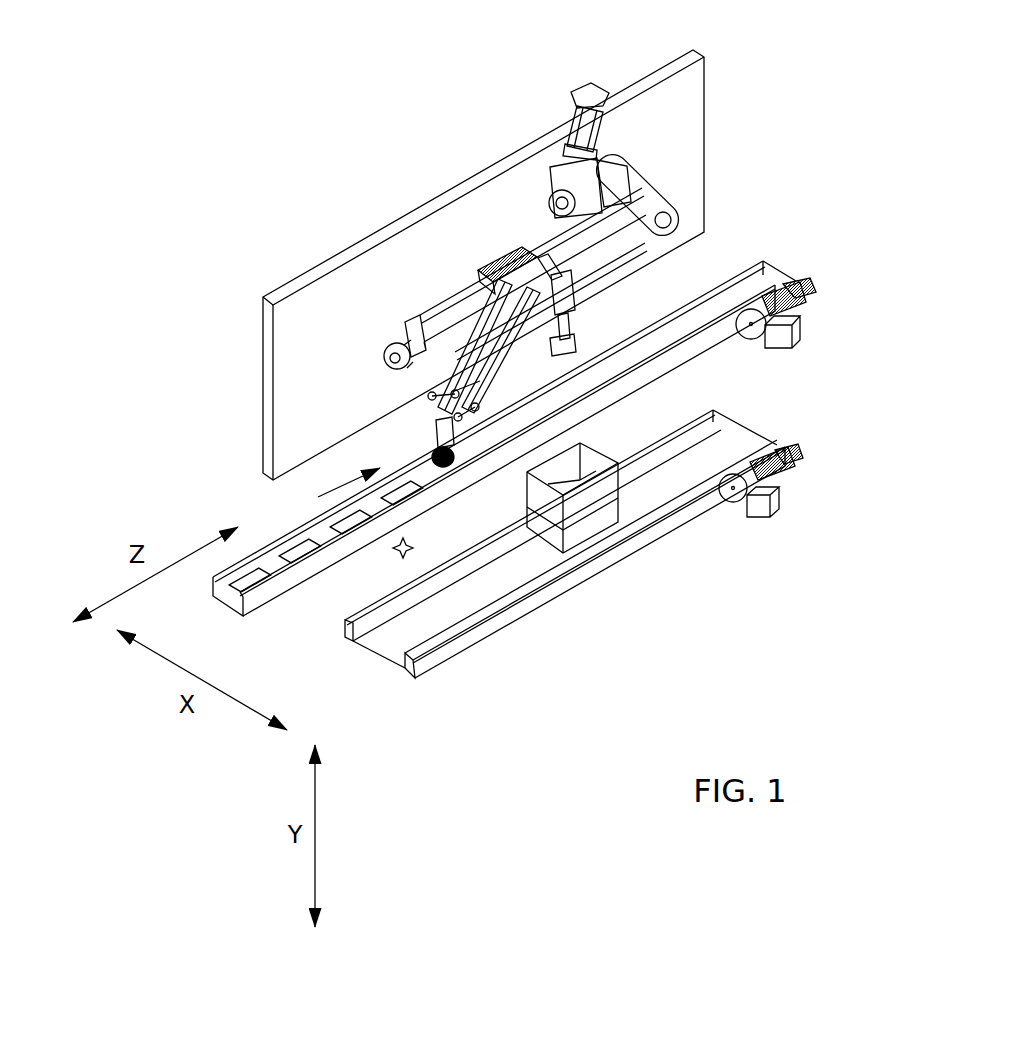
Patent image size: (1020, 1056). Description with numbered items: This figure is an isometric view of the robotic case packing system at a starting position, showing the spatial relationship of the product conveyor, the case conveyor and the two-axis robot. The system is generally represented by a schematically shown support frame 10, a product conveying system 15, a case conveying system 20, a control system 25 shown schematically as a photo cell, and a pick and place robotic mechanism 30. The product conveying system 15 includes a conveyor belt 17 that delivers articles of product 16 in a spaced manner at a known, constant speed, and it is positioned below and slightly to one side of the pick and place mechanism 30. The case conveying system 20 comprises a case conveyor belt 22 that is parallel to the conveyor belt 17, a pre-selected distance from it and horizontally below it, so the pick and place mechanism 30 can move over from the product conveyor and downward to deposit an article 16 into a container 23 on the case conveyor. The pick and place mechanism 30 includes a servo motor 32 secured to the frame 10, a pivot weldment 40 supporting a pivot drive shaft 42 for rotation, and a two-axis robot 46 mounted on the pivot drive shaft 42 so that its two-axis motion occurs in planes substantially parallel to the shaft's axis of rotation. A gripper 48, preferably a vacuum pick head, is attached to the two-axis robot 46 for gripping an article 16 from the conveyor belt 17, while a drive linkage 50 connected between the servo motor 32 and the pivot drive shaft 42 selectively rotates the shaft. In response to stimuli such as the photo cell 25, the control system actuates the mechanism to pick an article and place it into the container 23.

The support frame 10 is at (713, 88).
The product conveying system 15 is at (788, 268).
The article of product 16 is at (326, 536).
The conveyor belt 17 is at (588, 395).
The case conveying system 20 is at (754, 427).
The case conveyor belt 22 is at (461, 603).
The container 23 is at (577, 535).
The control system 25 is at (406, 556).
The pick and place robotic mechanism 30 is at (498, 250).
The servo motor 32 is at (610, 88).
The pivot weldment 40 is at (441, 318).
The pivot drive shaft 42 is at (381, 375).
The two-axis robot 46 is at (575, 322).
The gripper 48 is at (453, 453).
The drive linkage 50 is at (655, 183).